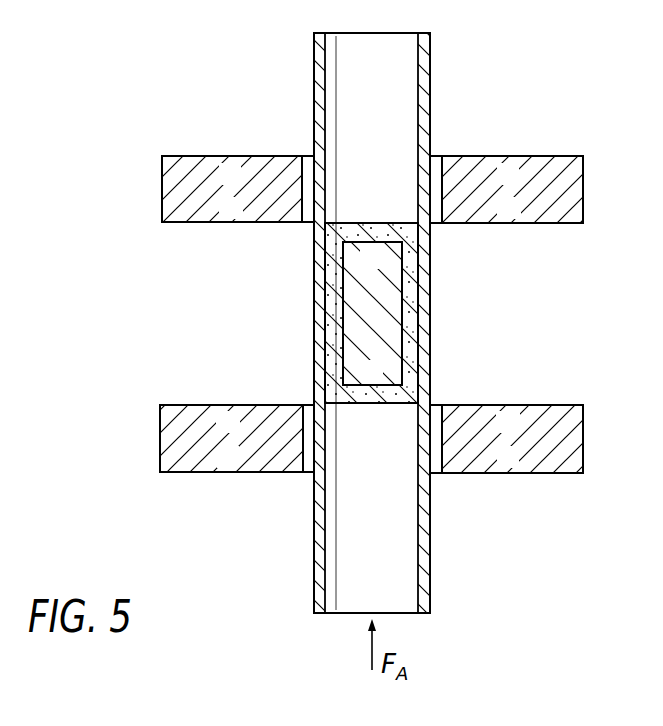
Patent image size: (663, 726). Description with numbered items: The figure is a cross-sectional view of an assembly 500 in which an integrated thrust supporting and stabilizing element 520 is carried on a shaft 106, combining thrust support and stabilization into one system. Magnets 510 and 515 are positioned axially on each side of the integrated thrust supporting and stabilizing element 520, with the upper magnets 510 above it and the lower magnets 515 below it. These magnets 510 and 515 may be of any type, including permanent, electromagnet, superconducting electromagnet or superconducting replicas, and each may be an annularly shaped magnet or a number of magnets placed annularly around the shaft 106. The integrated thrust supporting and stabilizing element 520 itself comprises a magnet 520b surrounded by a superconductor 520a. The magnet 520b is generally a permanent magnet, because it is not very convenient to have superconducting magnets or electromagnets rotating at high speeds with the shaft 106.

The linear actuator assembly 500 is at (362, 321).
The shaft 106 is at (412, 63).
The magnet 510 is at (178, 216).
The magnet 515 is at (183, 462).
The integrated thrust supporting and stabilizing element 520 is at (456, 313).
The superconductor 520a is at (418, 309).
The magnet 520b is at (388, 282).